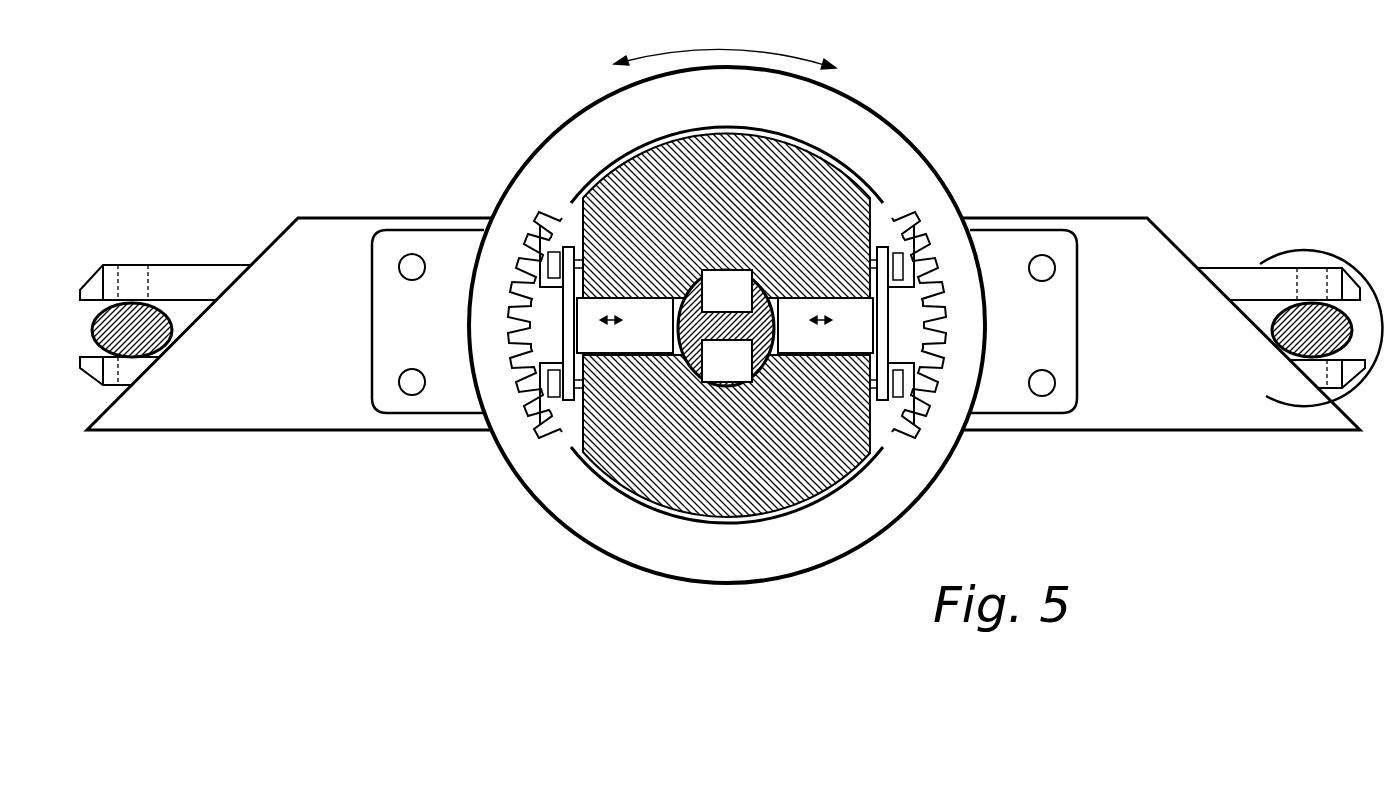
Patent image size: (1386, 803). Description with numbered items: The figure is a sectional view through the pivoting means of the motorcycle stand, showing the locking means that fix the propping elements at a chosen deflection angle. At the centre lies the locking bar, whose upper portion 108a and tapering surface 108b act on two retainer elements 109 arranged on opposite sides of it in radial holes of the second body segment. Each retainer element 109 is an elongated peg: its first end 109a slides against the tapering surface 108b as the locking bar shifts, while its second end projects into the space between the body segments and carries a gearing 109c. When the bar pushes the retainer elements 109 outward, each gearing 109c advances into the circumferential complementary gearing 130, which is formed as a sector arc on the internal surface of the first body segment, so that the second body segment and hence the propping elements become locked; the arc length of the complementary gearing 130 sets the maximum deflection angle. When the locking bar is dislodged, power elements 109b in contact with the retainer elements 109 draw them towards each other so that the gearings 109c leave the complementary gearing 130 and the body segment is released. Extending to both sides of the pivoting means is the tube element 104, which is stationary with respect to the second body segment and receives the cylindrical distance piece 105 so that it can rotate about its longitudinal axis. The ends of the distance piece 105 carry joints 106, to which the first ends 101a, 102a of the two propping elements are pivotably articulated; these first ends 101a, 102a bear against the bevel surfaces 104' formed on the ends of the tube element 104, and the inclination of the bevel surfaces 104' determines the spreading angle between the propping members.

The first end of propping element 101a is at (90, 318).
The first end of propping element 102a is at (1265, 316).
The tube element 104 is at (289, 255).
The bevel surfaces 104' is at (369, 261).
The distance piece 105 is at (208, 265).
The joints 106 is at (142, 270).
The upper rotor half 108a is at (603, 160).
The tapering surface 108b is at (735, 527).
The retainer elements 109 is at (683, 319).
The first end of retainer element 109a is at (665, 320).
The power elements 109b is at (555, 418).
The gearing 109c is at (533, 217).
The complementary gearing 130 is at (535, 427).